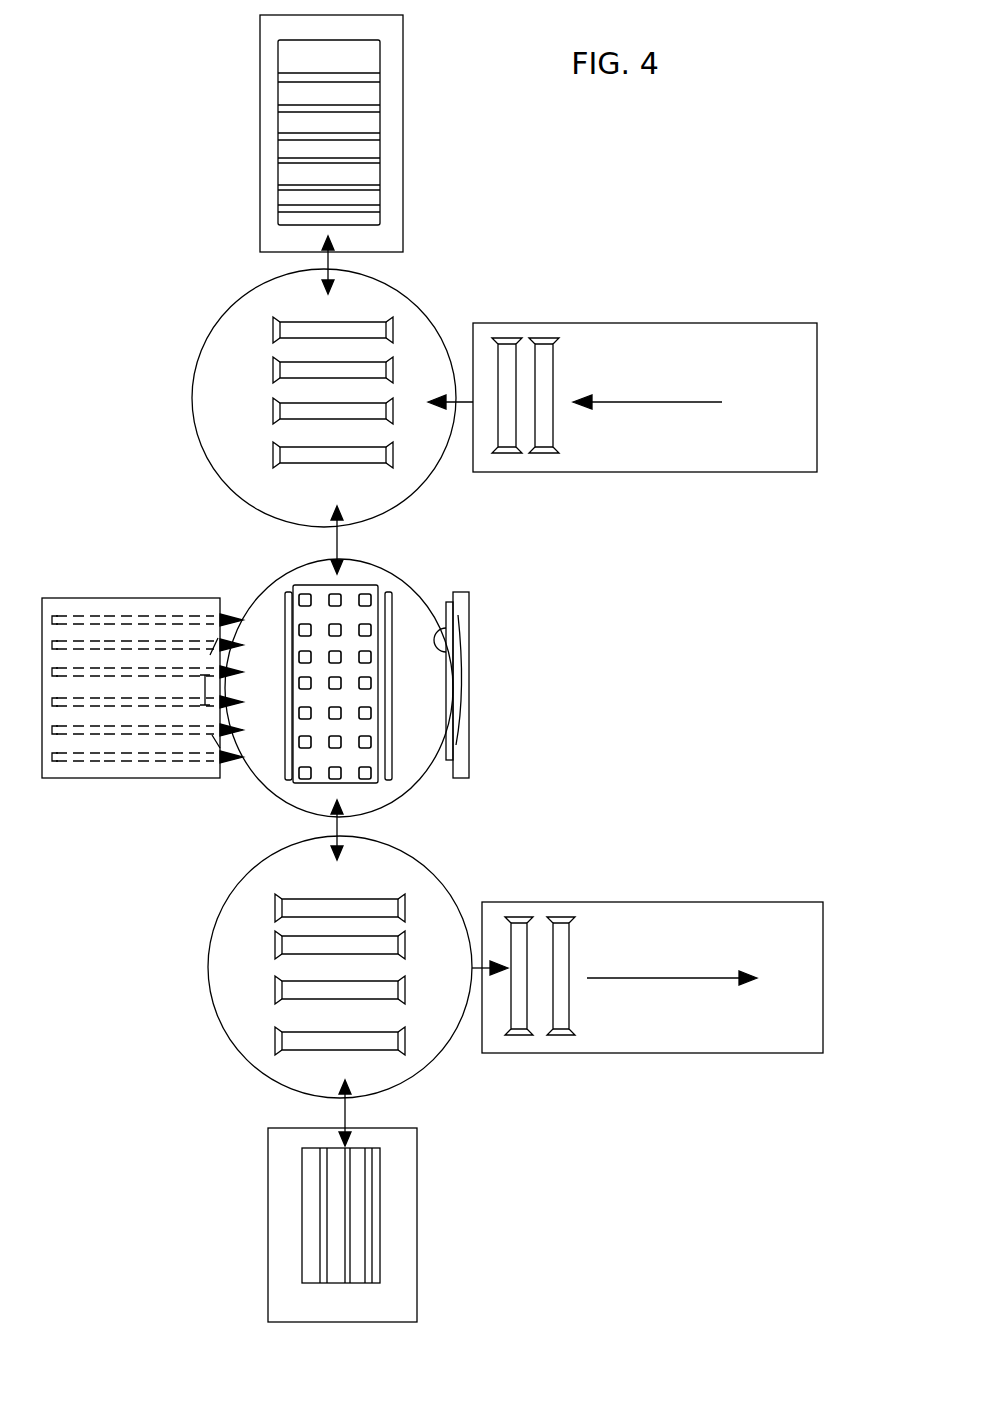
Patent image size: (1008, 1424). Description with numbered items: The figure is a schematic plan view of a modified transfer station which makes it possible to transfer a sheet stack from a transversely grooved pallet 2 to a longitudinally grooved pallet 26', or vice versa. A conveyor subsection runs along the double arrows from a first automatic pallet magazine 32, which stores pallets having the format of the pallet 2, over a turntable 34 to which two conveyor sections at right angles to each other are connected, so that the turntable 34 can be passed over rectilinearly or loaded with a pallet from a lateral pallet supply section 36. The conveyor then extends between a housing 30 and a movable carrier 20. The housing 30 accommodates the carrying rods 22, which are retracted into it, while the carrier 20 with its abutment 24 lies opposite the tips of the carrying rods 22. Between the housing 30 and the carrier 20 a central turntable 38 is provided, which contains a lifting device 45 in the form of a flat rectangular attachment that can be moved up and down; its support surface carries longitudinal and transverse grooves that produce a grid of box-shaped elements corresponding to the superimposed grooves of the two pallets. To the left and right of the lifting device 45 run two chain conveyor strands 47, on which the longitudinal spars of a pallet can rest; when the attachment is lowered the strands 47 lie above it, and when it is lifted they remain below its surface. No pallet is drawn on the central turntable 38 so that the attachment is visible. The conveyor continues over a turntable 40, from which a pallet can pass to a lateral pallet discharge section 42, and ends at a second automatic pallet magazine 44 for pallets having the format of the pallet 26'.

The pallet 2 is at (360, 62).
The first automatic pallet magazine 32 is at (385, 145).
The turntable 34 is at (410, 325).
The lateral pallet supply section 36 is at (632, 343).
The central turntable 38 is at (410, 595).
The lifting device 45 is at (348, 770).
The chain conveyor strands 47 is at (286, 592).
The movable carrier 20 is at (453, 765).
The abutment 24 is at (444, 625).
The housing 30 is at (122, 610).
The carrying rods 22 is at (150, 726).
The turntable 40 is at (237, 992).
The lateral pallet discharge section 42 is at (643, 910).
The second automatic pallet magazine 44 is at (400, 1223).
The longitudinally grooved pallet 26' is at (399, 1215).